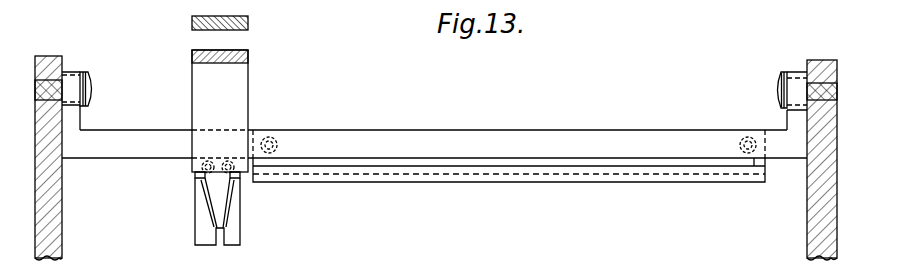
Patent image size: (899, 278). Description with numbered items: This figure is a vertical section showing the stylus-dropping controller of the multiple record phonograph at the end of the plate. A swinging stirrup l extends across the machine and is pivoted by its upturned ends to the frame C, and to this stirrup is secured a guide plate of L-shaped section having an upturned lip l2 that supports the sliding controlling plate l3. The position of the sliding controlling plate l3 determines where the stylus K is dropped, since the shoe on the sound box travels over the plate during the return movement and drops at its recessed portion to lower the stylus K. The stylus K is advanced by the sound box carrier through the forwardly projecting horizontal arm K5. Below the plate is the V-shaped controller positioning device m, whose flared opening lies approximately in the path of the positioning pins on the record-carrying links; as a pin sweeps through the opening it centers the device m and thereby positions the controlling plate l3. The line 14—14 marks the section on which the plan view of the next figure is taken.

The frame C is at (62, 230).
The stylus K is at (249, 20).
The horizontal arm K5 is at (250, 63).
The swinging stirrup l is at (447, 132).
The upturned lip l2 is at (563, 182).
The sliding controlling plate l3 is at (513, 161).
The section line 14— 14 is at (190, 165).
The V-shaped controller positioning device m is at (232, 230).